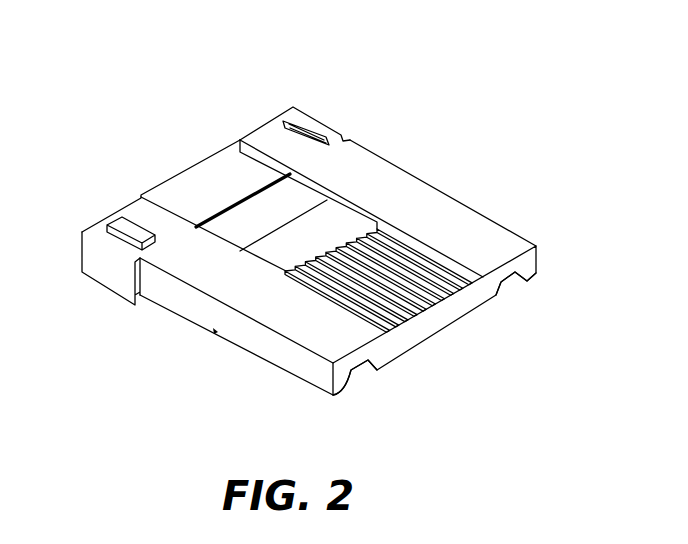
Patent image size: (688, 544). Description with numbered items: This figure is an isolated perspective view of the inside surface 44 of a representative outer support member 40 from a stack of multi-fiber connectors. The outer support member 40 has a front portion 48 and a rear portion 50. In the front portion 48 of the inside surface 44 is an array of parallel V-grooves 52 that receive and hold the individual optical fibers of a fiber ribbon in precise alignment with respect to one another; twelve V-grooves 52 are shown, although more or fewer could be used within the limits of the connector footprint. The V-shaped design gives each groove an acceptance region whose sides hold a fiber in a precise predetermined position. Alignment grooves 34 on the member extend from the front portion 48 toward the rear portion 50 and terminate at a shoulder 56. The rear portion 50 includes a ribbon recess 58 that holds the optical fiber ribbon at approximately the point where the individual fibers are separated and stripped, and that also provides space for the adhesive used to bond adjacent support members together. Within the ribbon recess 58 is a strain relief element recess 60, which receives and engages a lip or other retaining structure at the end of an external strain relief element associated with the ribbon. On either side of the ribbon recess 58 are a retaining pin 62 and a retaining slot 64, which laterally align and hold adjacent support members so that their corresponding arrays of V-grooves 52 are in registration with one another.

The alignment grooves 34 is at (517, 300).
The outer support member 40 is at (383, 108).
The inside surface 44 is at (401, 207).
The front portion 48 is at (529, 212).
The rear portion 50 is at (337, 99).
The V-grooves 52 is at (458, 308).
The shoulder 56 is at (216, 334).
The ribbon recess 58 is at (189, 191).
The strain relief element recess 60 is at (253, 200).
The retaining pin 62 is at (118, 218).
The retaining slot 64 is at (300, 119).